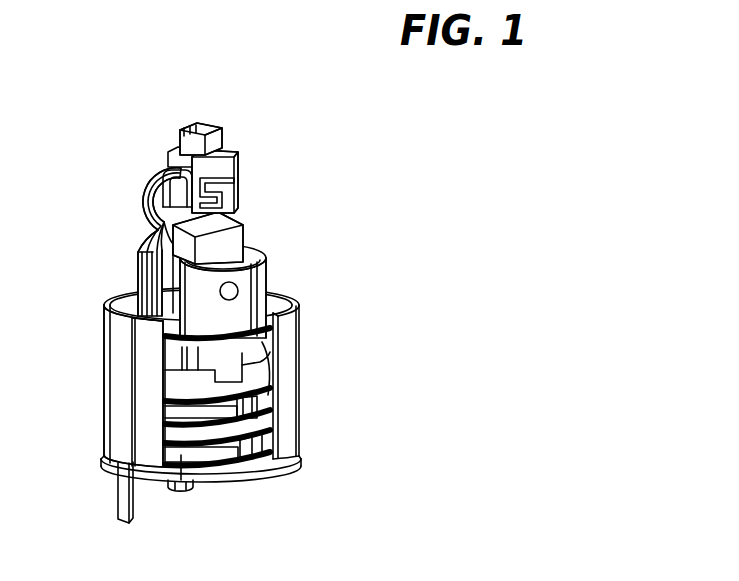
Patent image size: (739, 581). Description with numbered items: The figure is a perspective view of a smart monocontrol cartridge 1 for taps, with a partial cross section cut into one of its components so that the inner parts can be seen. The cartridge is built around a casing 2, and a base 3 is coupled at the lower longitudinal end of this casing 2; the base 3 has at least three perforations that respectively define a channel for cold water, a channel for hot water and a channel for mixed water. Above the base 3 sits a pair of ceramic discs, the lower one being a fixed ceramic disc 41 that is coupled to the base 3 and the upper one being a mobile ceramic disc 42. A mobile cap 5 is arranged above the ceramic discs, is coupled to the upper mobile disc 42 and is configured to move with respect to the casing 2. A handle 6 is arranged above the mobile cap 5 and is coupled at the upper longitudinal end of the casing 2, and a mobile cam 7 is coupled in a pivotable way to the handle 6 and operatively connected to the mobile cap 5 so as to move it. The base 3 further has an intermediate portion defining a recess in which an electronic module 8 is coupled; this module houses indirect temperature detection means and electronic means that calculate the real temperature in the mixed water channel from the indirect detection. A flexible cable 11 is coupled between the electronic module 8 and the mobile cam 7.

The smart monocontrol cartridge 1 is at (265, 343).
The casing 2 is at (288, 296).
The base 3 is at (285, 462).
The mobile cap 5 is at (245, 352).
The handle 6 is at (186, 310).
The mobile cam 7 is at (232, 238).
The electronic module 8 is at (182, 492).
The flexible cable 11 is at (147, 252).
The lower fixed ceramic disc 41 is at (180, 413).
The upper mobile ceramic disc 42 is at (253, 380).